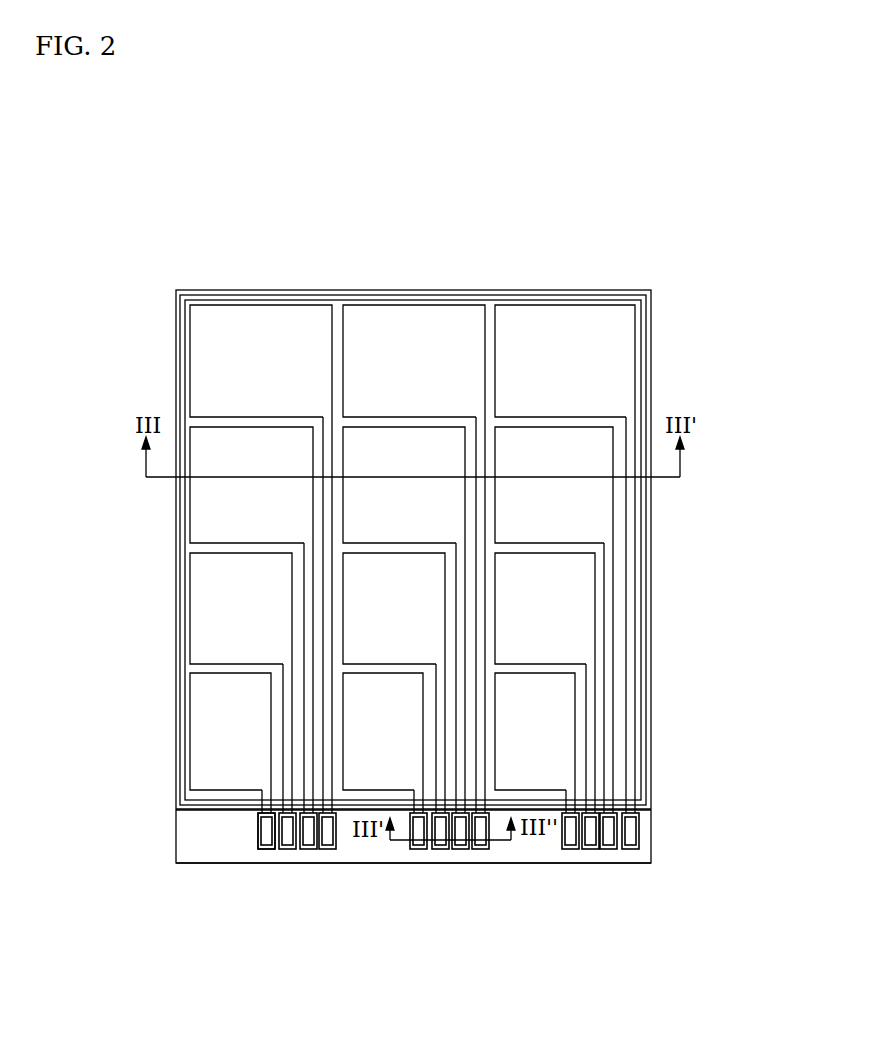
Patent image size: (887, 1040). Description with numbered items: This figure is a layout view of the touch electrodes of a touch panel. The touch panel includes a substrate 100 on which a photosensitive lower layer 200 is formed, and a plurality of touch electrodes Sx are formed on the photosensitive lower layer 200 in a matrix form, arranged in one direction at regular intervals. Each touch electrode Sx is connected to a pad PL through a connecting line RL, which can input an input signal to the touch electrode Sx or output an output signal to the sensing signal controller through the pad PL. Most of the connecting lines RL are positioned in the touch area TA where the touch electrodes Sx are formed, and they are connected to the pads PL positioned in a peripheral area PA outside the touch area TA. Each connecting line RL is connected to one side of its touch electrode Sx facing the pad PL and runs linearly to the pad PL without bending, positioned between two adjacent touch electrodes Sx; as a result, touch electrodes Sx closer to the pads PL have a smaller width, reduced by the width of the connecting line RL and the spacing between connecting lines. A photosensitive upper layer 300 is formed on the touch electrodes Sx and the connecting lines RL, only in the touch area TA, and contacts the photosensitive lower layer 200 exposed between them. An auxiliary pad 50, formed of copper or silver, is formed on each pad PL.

The substrate 100 is at (187, 865).
The photosensitive lower layer 200 is at (648, 790).
The photosensitive upper layer 300 is at (643, 745).
The touch electrode Sx is at (582, 587).
The connecting line RL is at (632, 628).
The auxiliary pad 50 is at (265, 847).
The pad PL is at (250, 842).
The touch area TA is at (127, 295).
The peripheral area PA is at (127, 818).